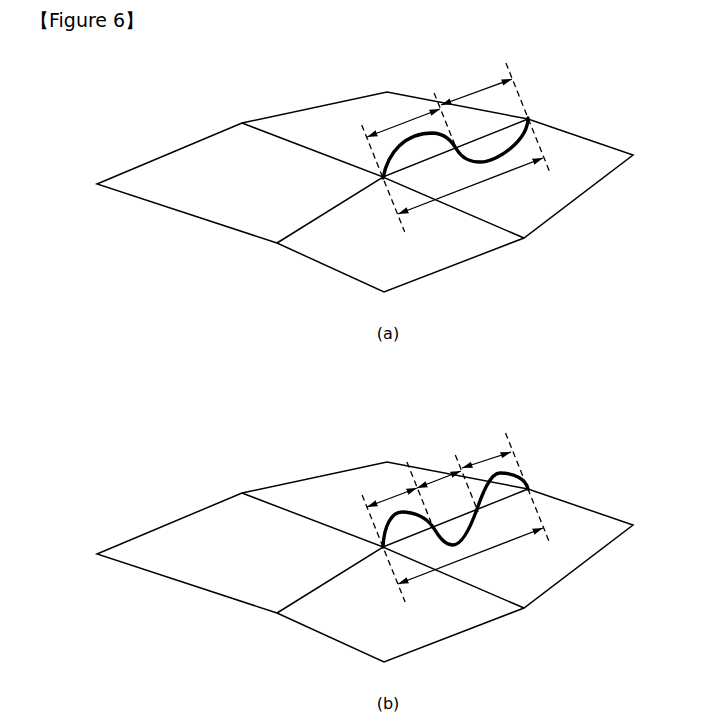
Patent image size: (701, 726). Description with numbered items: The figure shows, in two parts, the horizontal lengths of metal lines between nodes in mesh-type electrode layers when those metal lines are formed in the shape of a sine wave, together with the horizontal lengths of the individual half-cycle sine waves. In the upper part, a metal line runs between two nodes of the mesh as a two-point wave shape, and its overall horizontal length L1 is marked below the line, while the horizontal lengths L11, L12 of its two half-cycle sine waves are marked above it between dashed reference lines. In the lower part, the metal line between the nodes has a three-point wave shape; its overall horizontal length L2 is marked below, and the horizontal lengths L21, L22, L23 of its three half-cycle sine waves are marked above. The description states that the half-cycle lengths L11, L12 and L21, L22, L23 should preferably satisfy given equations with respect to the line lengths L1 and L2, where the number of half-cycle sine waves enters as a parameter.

The horizontal length of the metal line between the nodes L1 is at (470, 186).
The horizontal length of a half-cycle sine wave L11 is at (403, 118).
The horizontal length of a half-cycle sine wave L12 is at (476, 87).
The horizontal length of the metal line between the nodes L2 is at (470, 556).
The horizontal length of a half-cycle sine wave L21 is at (392, 490).
The horizontal length of a half-cycle sine wave L22 is at (439, 471).
The horizontal length of a half-cycle sine wave L23 is at (486, 451).